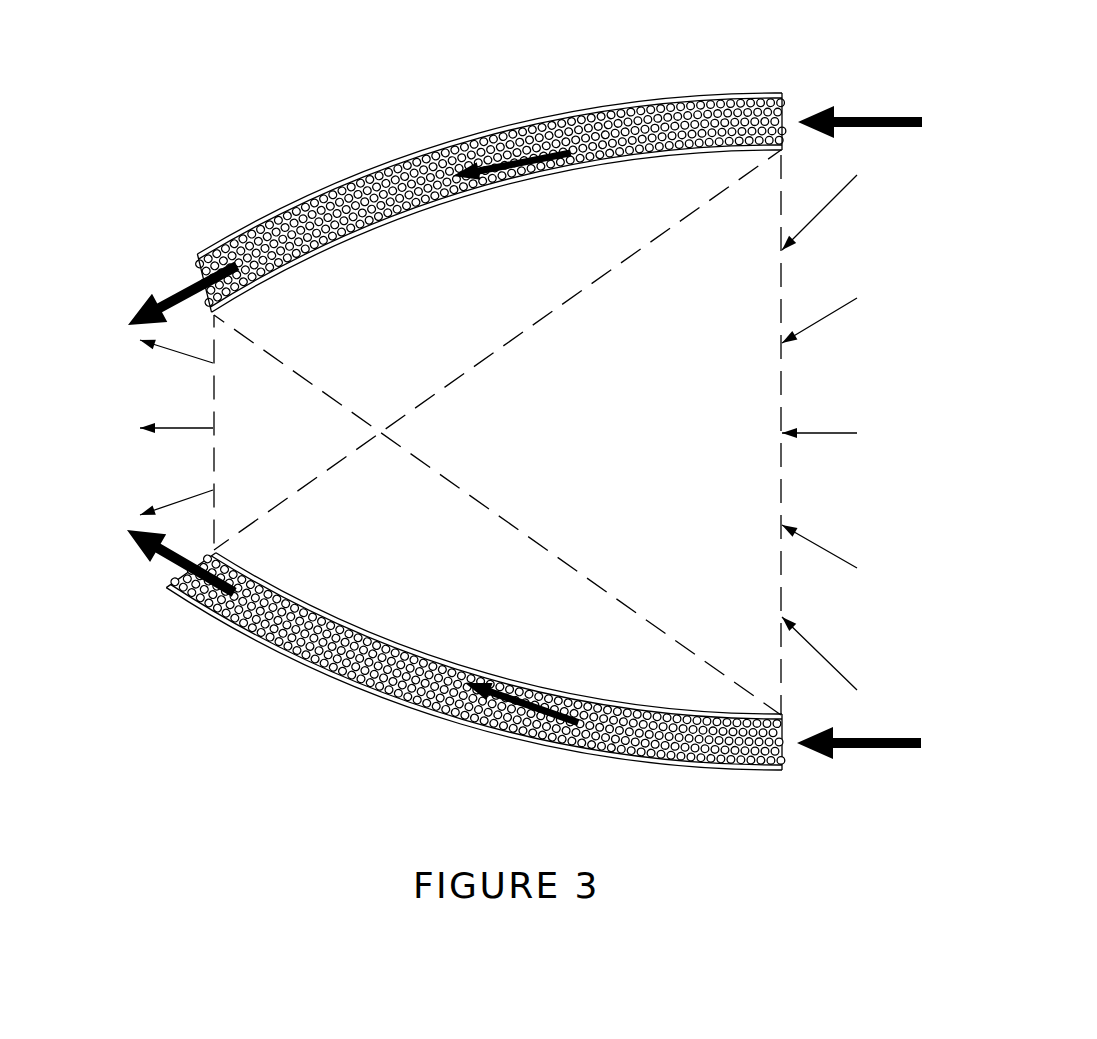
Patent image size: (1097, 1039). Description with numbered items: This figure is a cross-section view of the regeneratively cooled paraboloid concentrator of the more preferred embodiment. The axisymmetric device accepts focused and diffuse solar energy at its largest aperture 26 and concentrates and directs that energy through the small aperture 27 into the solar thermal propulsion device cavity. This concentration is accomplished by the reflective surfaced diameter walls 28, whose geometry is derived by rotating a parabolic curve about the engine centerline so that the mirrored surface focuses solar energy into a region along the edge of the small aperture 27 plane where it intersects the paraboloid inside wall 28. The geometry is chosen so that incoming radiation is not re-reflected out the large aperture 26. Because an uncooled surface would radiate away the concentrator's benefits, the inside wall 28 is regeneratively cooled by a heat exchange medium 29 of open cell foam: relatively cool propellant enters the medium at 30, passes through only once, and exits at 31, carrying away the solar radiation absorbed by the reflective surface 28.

The largest aperture 26 is at (780, 383).
The small aperture 27 is at (218, 457).
The reflective surfaced diameter walls 28 is at (377, 235).
The heat exchange medium 29 is at (583, 110).
The propellant entry 30 is at (785, 91).
The propellant exit 31 is at (197, 253).